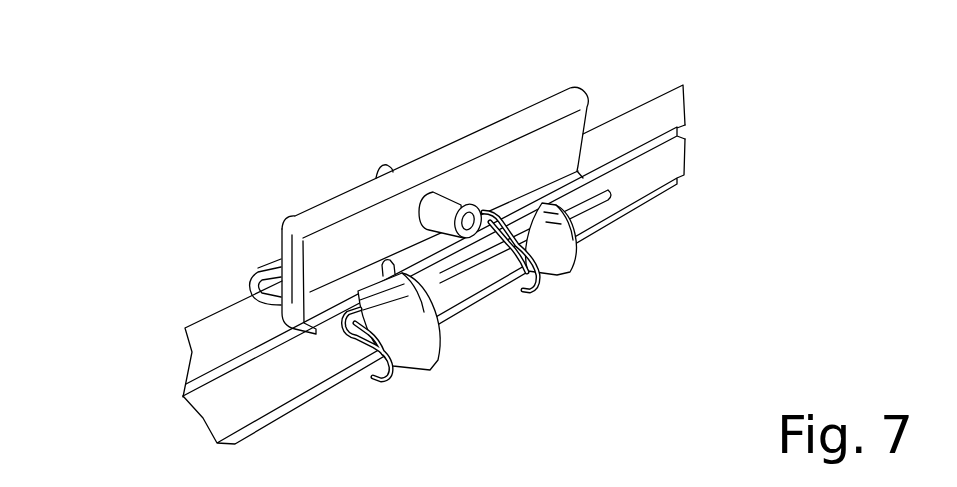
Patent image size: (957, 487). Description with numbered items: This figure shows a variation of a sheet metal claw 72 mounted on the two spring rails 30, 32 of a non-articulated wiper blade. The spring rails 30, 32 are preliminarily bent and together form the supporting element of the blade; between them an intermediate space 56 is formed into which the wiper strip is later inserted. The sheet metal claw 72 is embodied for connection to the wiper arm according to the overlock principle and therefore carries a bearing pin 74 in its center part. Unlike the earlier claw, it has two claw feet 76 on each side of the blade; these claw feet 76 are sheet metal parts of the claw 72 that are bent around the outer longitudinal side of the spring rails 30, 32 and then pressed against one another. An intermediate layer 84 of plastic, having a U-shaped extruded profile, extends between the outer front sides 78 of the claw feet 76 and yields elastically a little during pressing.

The spring rail 30 is at (667, 167).
The spring rail 32 is at (672, 112).
The intermediate space 56 is at (187, 384).
The sheet metal claw 72 is at (548, 152).
The bearing pin 74 is at (443, 207).
The claw foot 76 is at (410, 337).
The outer front side 78 is at (378, 378).
The intermediate layer 84 is at (480, 287).